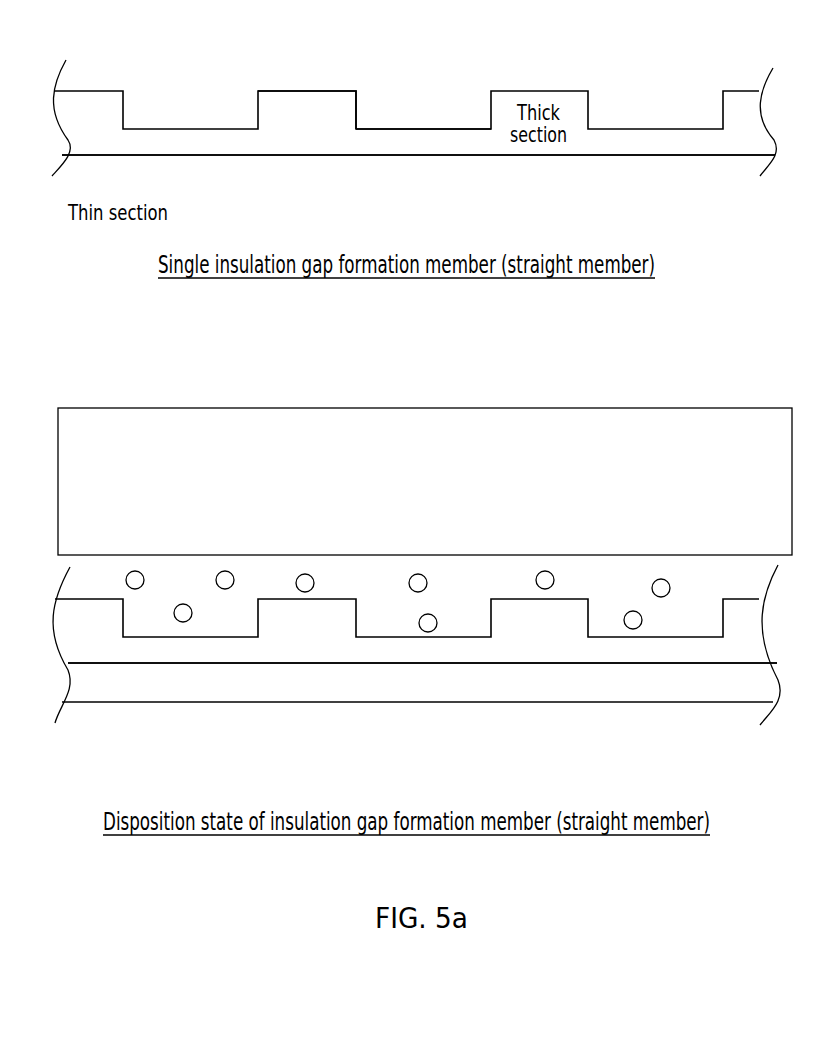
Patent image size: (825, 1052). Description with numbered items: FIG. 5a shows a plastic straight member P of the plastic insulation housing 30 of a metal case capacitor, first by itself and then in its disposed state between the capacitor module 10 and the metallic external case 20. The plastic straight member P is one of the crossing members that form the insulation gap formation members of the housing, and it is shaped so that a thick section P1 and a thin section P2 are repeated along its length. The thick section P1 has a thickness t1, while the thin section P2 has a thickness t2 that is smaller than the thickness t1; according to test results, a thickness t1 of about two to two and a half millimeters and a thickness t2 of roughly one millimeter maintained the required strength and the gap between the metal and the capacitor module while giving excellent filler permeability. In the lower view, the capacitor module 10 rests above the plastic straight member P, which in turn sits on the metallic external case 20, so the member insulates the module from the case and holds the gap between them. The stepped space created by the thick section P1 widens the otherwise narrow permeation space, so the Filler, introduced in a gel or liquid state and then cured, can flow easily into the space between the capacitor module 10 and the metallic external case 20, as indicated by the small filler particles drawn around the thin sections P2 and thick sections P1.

The capacitor module 10 is at (425, 481).
The metallic external case 20 is at (607, 680).
The plastic insulation housing 30 is at (310, 630).
The plastic straight member P is at (184, 98).
The thick section P1 is at (312, 108).
The thin section P2 is at (418, 155).
The thickness of the thick section t1 is at (287, 62).
The thickness of the thin section t2 is at (648, 100).
The filler Filler is at (185, 622).